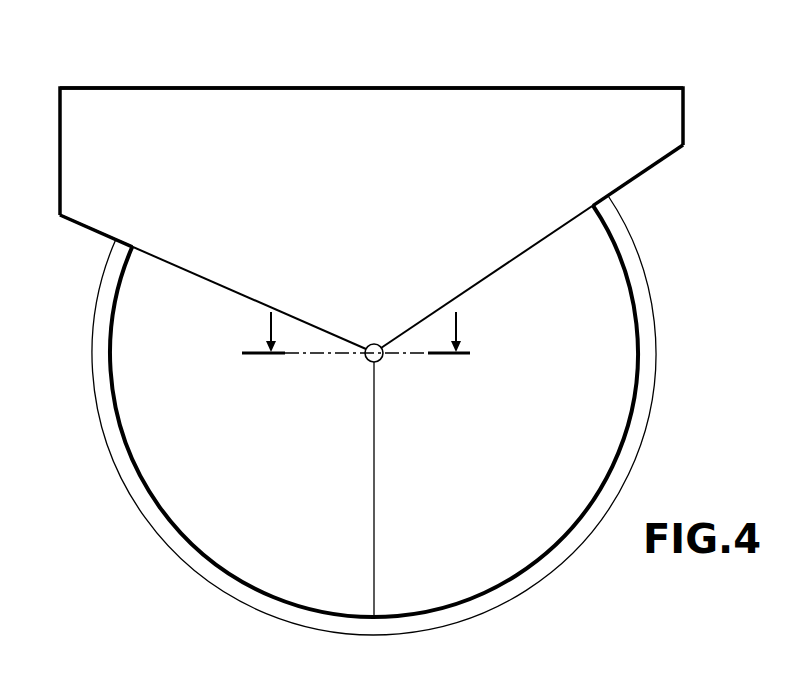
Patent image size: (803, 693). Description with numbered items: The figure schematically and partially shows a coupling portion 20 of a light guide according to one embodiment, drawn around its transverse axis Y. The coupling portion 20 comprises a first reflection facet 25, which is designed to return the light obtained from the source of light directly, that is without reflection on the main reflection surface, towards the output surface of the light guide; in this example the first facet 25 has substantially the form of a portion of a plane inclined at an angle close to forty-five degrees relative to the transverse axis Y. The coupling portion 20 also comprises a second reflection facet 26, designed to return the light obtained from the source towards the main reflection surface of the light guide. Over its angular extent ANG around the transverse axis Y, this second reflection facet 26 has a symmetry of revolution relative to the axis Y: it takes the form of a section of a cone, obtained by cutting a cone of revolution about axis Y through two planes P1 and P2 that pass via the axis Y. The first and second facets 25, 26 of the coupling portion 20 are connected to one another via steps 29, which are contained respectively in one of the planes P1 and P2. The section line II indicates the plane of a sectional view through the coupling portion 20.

The coupling portion 20 is at (188, 70).
The first reflection facet 25 is at (500, 145).
The steps 29 is at (230, 291).
The second reflection facet 26 is at (448, 580).
The first plane P1 is at (658, 160).
The second plane P2 is at (70, 220).
The transverse axis Y is at (370, 364).
The section line II is at (361, 332).
The angular extent ANG is at (184, 600).